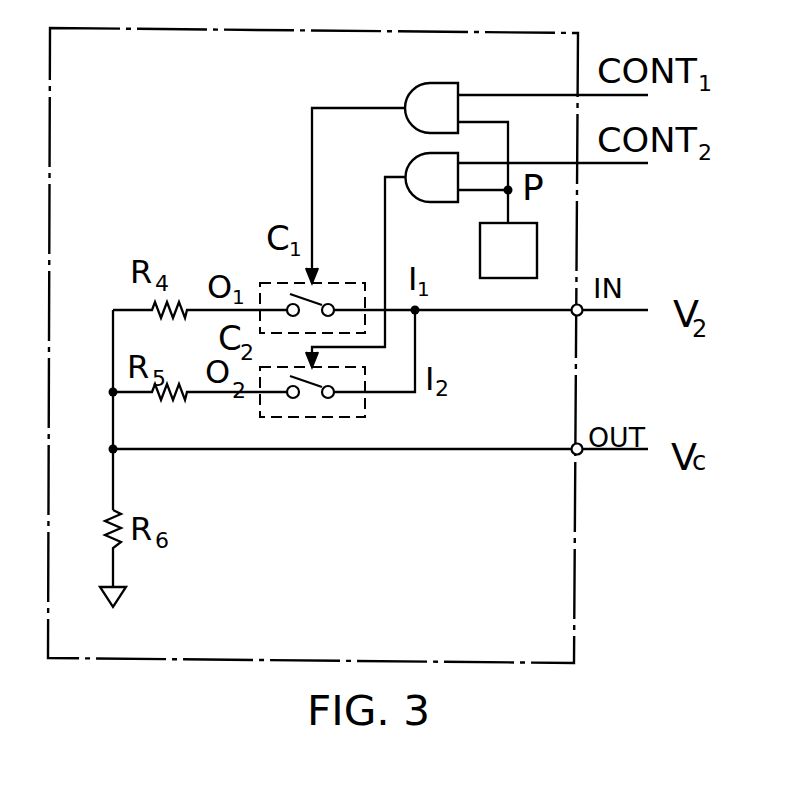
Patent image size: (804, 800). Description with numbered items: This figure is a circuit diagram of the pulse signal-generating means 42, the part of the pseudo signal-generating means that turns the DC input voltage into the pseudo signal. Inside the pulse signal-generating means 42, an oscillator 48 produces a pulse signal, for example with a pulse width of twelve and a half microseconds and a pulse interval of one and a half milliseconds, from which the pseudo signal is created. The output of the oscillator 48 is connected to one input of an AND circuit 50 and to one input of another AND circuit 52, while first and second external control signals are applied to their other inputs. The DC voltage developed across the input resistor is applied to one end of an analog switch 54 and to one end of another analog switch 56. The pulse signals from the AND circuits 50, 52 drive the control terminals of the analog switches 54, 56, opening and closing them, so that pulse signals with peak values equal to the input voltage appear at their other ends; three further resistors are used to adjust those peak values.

The pulse signal-generating means 42 is at (575, 615).
The oscillator 48 is at (537, 234).
The AND circuit 50 is at (415, 92).
The AND circuit 52 is at (410, 166).
The analog switch 54 is at (337, 283).
The analog switch 56 is at (308, 417).